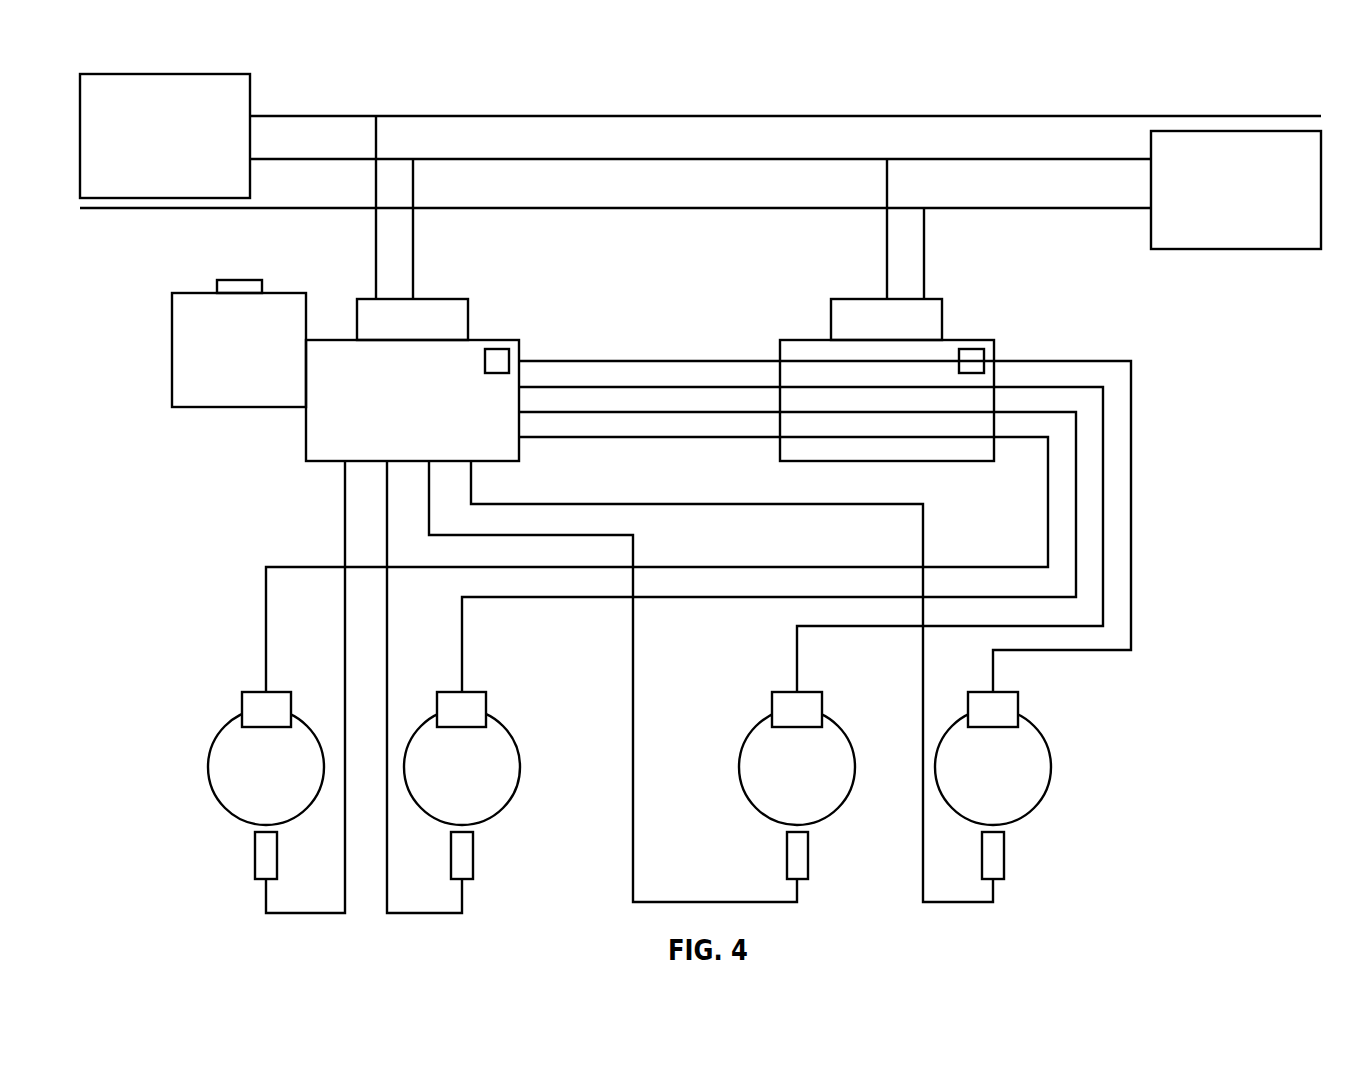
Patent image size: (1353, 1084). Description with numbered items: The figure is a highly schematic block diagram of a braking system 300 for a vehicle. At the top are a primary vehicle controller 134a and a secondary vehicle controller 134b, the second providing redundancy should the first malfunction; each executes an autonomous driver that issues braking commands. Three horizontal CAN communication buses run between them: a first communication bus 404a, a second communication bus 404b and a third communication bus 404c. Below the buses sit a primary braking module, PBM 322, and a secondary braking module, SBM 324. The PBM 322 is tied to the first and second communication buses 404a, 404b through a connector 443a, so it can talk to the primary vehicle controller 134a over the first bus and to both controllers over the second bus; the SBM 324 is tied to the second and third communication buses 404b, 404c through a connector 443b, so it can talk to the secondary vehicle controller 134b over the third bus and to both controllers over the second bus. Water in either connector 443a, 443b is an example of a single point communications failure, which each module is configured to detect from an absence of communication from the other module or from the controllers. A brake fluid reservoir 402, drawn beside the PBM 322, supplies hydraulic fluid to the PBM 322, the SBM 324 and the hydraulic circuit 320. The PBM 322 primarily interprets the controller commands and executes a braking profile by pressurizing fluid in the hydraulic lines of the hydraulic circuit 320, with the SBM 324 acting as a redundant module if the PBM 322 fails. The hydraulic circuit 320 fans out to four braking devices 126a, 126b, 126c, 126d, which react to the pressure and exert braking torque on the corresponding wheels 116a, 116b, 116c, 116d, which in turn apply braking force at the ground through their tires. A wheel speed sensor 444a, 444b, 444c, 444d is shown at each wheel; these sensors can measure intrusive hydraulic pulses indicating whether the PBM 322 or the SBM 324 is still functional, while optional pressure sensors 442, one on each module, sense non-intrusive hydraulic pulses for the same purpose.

The primary vehicle controller 134a is at (127, 74).
The secondary vehicle controller 134b is at (1273, 250).
The first communication bus 404a is at (665, 115).
The second communication bus 404b is at (665, 158).
The third communication bus 404c is at (665, 207).
The brake fluid reservoir 402 is at (195, 293).
The connector 443a is at (363, 299).
The connector 443b is at (845, 299).
The pressure sensor 442 is at (497, 349).
The PBM 322 is at (493, 462).
The SBM 324 is at (963, 462).
The hydraulic circuit 320 is at (1153, 511).
The wheel 116a is at (222, 729).
The wheel 116b is at (506, 729).
The wheel 116c is at (753, 729).
The wheel 116d is at (1037, 729).
The braking device 126a is at (255, 692).
The braking device 126b is at (470, 692).
The braking device 126c is at (786, 692).
The braking device 126d is at (1002, 692).
The wheel speed sensor 444a is at (255, 857).
The wheel speed sensor 444b is at (473, 857).
The wheel speed sensor 444c is at (787, 857).
The wheel speed sensor 444d is at (1004, 857).
The braking system 300 is at (1217, 811).